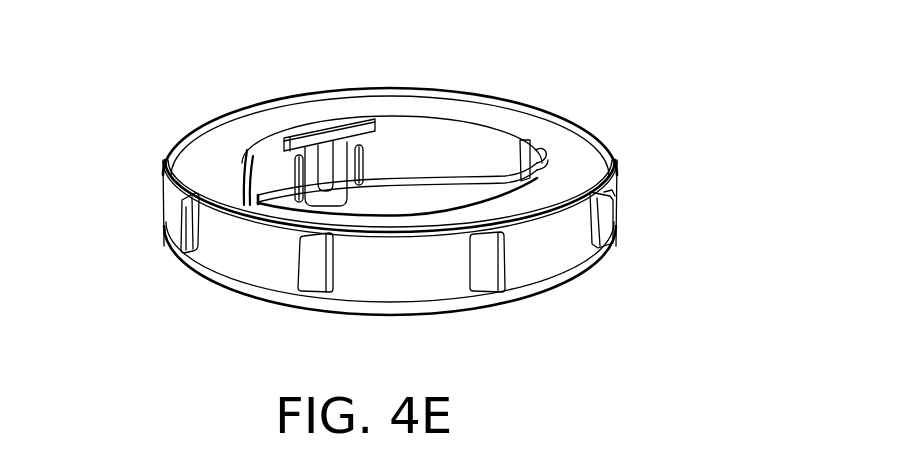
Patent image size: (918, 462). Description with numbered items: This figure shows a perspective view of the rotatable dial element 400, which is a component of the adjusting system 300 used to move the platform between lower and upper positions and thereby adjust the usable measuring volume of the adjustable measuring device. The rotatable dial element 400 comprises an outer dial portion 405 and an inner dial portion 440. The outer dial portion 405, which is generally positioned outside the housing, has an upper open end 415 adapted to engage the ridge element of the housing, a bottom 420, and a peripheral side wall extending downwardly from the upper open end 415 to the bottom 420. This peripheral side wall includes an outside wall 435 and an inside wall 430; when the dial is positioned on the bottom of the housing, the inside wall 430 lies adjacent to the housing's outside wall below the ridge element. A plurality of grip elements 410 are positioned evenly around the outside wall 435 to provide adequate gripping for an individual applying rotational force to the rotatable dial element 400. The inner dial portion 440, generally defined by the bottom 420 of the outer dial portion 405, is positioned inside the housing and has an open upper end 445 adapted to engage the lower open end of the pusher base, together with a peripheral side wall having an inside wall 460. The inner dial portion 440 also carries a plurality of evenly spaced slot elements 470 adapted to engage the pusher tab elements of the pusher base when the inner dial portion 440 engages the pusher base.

The adjusting system 300 is at (667, 168).
The rotatable dial element 400 is at (170, 175).
The outer dial portion 405 is at (543, 110).
The grip elements 410 is at (312, 278).
The upper open end 415 is at (398, 85).
The bottom 420 is at (418, 318).
The inside wall 430 is at (568, 172).
The outside wall 435 is at (620, 193).
The inner dial portion 440 is at (263, 138).
The open upper end 445 is at (472, 140).
The inside wall 460 is at (276, 168).
The slot elements 470 is at (222, 172).